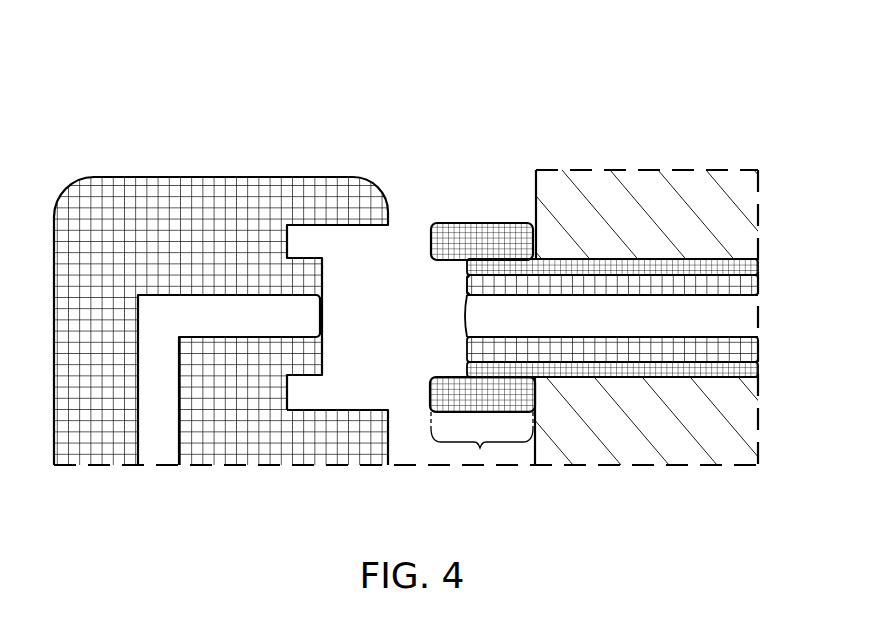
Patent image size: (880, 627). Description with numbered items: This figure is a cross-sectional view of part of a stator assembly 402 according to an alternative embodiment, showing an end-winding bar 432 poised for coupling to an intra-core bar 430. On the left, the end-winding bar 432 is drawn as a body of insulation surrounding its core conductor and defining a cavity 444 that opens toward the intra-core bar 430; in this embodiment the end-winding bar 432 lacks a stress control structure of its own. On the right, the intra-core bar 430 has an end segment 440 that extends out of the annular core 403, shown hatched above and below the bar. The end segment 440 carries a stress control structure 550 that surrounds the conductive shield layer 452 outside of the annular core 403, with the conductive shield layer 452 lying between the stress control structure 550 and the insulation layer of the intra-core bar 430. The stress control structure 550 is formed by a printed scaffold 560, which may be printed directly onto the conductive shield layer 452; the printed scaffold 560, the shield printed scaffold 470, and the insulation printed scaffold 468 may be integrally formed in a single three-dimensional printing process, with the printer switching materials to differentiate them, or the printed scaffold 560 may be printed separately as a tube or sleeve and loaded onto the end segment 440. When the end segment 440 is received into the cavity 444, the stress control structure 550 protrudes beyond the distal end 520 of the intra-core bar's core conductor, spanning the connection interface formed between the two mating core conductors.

The stator assembly 402 is at (410, 114).
The annular core 403 is at (700, 177).
The intra-core bar 430 is at (612, 256).
The end-winding bar 432 is at (163, 177).
The end segment 440 is at (480, 448).
The cavity 444 is at (395, 396).
The conductive shield layer 452 is at (508, 256).
The insulation printed scaffold 468 is at (473, 283).
The shield printed scaffold 470 is at (517, 259).
The distal end 520 is at (468, 316).
The stress control structure 550 is at (460, 222).
The printed scaffold 560 is at (492, 232).